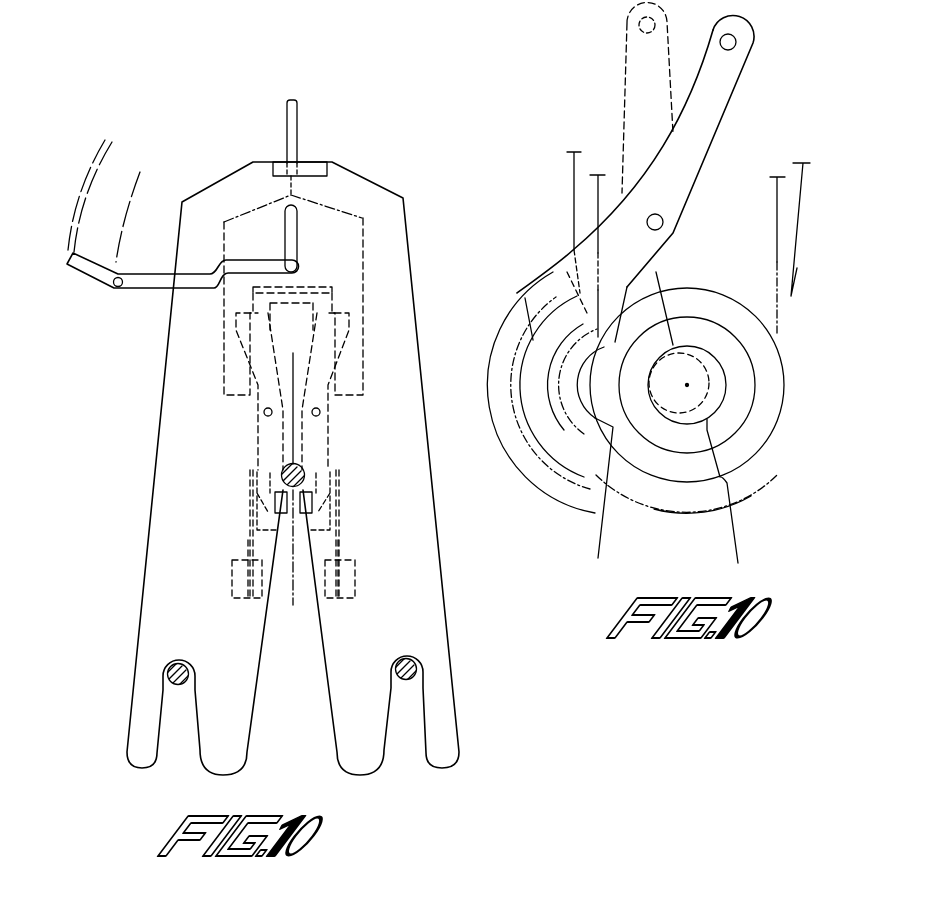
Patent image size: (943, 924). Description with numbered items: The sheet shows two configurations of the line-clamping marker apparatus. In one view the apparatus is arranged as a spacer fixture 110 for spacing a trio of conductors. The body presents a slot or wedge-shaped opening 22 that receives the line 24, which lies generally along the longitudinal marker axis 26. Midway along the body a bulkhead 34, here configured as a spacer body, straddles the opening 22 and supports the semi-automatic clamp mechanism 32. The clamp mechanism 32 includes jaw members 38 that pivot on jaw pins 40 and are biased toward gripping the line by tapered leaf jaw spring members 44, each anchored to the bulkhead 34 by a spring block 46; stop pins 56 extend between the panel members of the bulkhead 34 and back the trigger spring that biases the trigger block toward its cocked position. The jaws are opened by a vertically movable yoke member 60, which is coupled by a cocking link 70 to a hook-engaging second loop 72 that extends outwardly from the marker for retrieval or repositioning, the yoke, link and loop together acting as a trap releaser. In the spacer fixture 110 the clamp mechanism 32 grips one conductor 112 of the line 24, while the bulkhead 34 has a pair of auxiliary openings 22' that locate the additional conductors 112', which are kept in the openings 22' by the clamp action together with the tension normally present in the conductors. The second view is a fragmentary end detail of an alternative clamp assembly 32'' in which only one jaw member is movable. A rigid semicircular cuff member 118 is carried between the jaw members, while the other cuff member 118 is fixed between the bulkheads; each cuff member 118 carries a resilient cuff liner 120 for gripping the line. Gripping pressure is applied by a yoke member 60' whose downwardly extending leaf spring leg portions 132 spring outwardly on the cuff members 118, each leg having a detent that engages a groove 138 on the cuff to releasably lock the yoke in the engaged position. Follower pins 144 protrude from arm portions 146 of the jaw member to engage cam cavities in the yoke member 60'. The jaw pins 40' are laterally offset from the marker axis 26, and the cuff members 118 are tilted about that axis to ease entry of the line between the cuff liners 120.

In FIG. 10, the opening 22 is at (293, 437).
In FIG. 10, the auxiliary openings 22' is at (298, 509).
In FIG. 10, the line 24 is at (282, 476).
In FIG. 10, the marker axis 26 is at (303, 470).
In FIG. 14, the marker axis 26 is at (700, 385).
In FIG. 10, the clamp mechanism 32 is at (247, 535).
In FIG. 10, the bulkhead 34 is at (425, 547).
In FIG. 10, the jaw members 38 is at (335, 420).
In FIG. 10, the jaw pins 40 is at (231, 420).
In FIG. 10, the jaw spring members 44 is at (250, 545).
In FIG. 10, the spring block 46 is at (232, 596).
In FIG. 10, the stop pins 56 is at (313, 288).
In FIG. 10, the yoke member 60 is at (318, 295).
In FIG. 10, the cocking link 70 is at (148, 290).
In FIG. 10, the second loop 72 is at (85, 273).
In FIG. 10, the spacer fixture 110 is at (401, 790).
In FIG. 10, the conductor 112 is at (337, 481).
In FIG. 10, the additional conductors 112' is at (296, 666).
In FIG. 14, the follower pins 144 is at (729, 27).
In FIG. 14, the arm portions 146 is at (701, 184).
In FIG. 14, the jaw pins 40' is at (656, 205).
In FIG. 14, the yoke member 60' is at (545, 221).
In FIG. 14, the leaf spring leg portions 132 is at (574, 197).
In FIG. 14, the groove 138 is at (525, 298).
In FIG. 14, the cuff members 118 is at (750, 462).
In FIG. 14, the cuff liner 120 is at (722, 408).
In FIG. 14, the clamp assembly 32'' is at (666, 501).